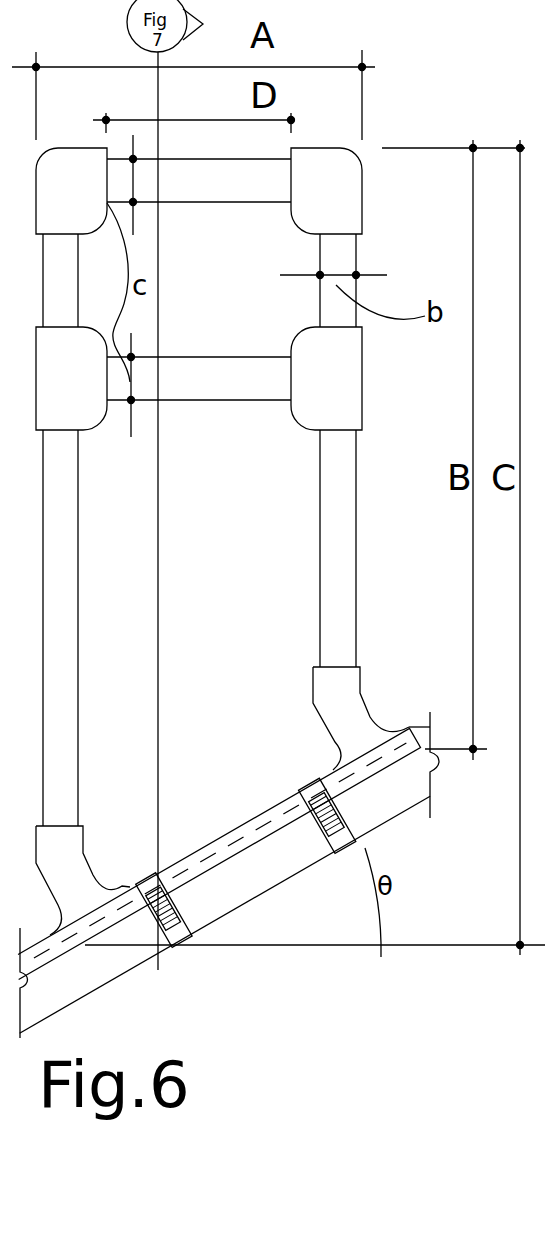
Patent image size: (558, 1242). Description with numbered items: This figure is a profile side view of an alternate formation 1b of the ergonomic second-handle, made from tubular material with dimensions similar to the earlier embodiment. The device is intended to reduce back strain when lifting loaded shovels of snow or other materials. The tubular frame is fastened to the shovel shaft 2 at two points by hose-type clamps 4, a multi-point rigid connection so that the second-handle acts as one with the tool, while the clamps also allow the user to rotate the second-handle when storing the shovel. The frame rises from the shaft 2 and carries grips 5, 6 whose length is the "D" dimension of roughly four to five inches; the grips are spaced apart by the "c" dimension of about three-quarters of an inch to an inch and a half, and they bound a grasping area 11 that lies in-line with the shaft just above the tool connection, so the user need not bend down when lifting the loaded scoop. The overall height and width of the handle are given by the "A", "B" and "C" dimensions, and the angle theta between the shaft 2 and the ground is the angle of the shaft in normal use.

The grip 5 is at (256, 202).
The grip 6 is at (258, 396).
The grasping area 11 is at (182, 323).
The alternate formation of the ergonomic second-handle 1b is at (340, 603).
The shaft 2 is at (240, 886).
The hose-type clamp 4 is at (322, 833).